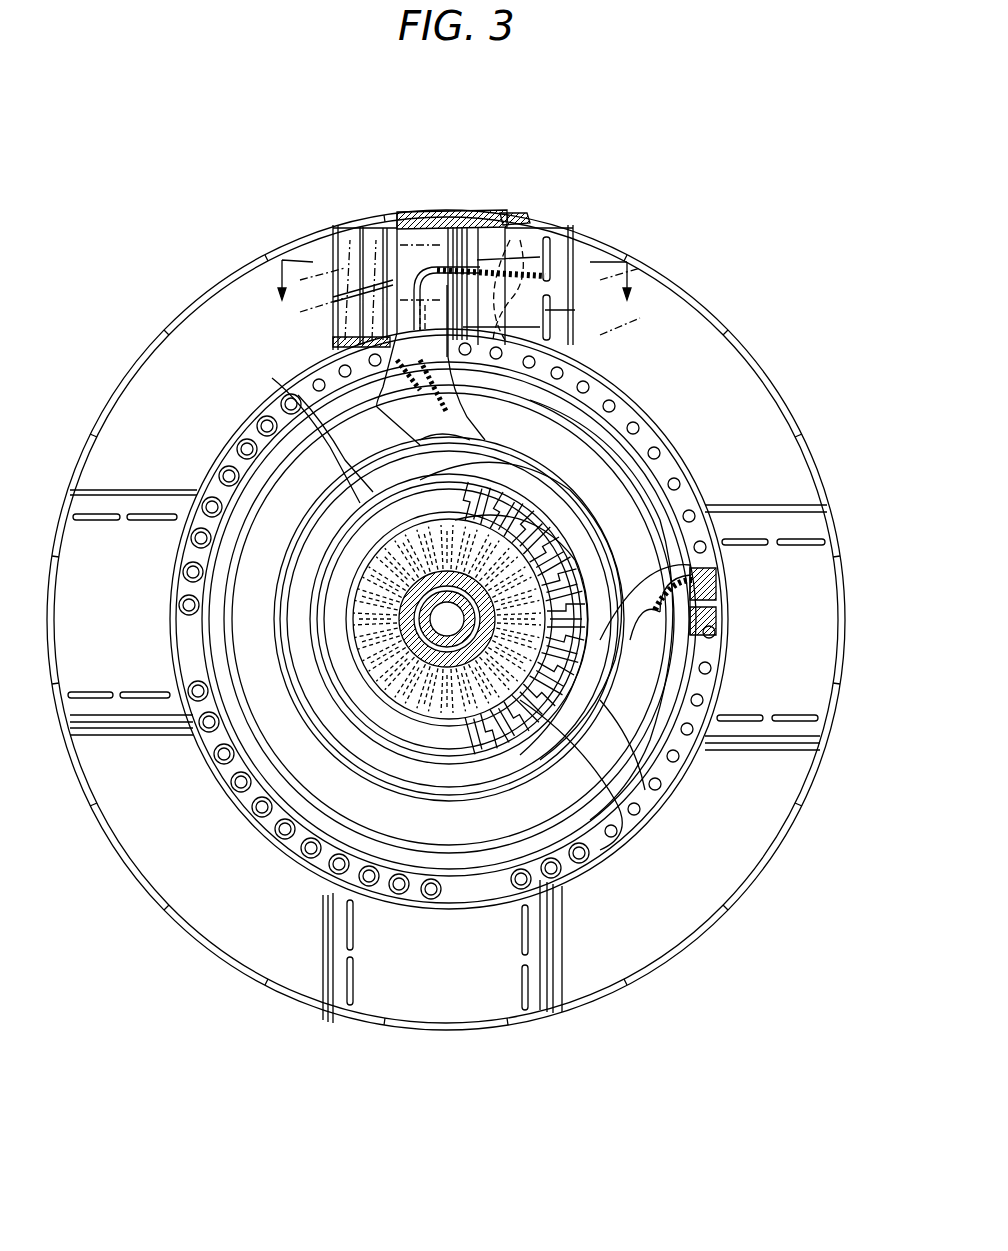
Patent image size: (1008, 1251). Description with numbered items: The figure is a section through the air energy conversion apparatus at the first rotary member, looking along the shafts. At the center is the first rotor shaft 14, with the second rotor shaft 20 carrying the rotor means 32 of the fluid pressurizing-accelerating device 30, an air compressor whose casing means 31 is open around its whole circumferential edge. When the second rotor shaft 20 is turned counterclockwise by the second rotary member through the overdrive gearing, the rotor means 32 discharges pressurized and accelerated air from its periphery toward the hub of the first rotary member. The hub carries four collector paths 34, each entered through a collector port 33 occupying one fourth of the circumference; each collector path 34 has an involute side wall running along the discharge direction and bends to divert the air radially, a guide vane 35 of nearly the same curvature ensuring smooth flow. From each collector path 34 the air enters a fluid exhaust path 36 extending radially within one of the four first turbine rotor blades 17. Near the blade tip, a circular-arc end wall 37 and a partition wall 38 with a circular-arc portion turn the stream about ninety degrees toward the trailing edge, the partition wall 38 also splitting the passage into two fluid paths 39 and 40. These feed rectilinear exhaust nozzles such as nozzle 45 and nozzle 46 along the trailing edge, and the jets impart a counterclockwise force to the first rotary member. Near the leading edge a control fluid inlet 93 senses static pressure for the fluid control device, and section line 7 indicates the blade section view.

The section line 7- 7 is at (448, 297).
The first rotor shaft 14 is at (573, 557).
The first turbine rotor blades 17 is at (97, 490).
The second rotor shaft 20 is at (413, 662).
The fluid pressurizing-accelerating device 30 is at (672, 773).
The casing means 31 is at (328, 797).
The rotor means 32 is at (327, 627).
The collector port 33 is at (573, 507).
The collector paths 34 is at (290, 392).
The guide vane 35 is at (427, 427).
The fluid exhaust path 36 is at (407, 228).
The end wall 37 is at (422, 240).
The partition wall 38 is at (397, 380).
The fluid path 39 is at (523, 227).
The fluid path 40 is at (548, 212).
The exhaust nozzle 45 is at (592, 261).
The exhaust nozzle 46 is at (565, 320).
The control fluid inlet 93 is at (530, 933).